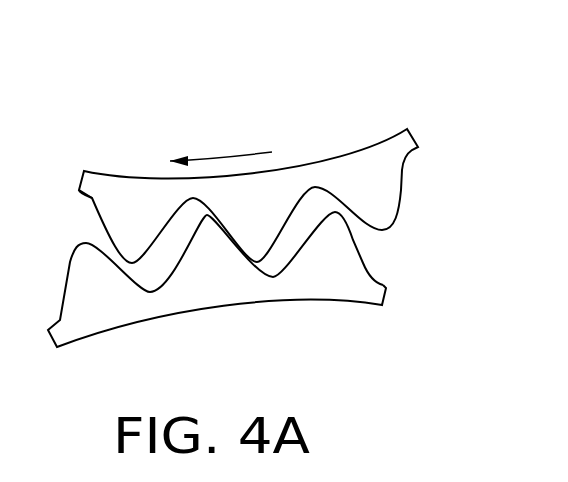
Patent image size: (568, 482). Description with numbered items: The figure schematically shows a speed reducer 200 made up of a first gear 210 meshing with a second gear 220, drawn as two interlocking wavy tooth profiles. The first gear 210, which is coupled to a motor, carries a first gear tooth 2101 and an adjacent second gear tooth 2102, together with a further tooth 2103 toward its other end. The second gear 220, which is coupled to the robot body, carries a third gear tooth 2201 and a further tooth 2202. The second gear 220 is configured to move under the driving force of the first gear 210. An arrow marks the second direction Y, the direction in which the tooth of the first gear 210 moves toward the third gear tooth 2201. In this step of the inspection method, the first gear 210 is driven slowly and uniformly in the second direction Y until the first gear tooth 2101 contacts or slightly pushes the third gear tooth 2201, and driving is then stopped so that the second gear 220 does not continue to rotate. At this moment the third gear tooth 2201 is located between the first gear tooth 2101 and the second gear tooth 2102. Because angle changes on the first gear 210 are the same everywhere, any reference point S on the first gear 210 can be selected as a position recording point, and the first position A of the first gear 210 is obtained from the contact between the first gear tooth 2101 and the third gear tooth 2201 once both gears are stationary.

The speed reducer 200 is at (248, 55).
The first gear 210 is at (382, 148).
The first gear tooth 2101 is at (260, 220).
The second gear tooth 2102 is at (137, 220).
The right tooth of first member 2103 is at (375, 197).
The second gear 220 is at (367, 290).
The third gear tooth 2201 is at (213, 250).
The right tooth of second member 2202 is at (345, 250).
The first position A is at (270, 228).
The reference point S is at (250, 228).
The second direction Y is at (221, 143).